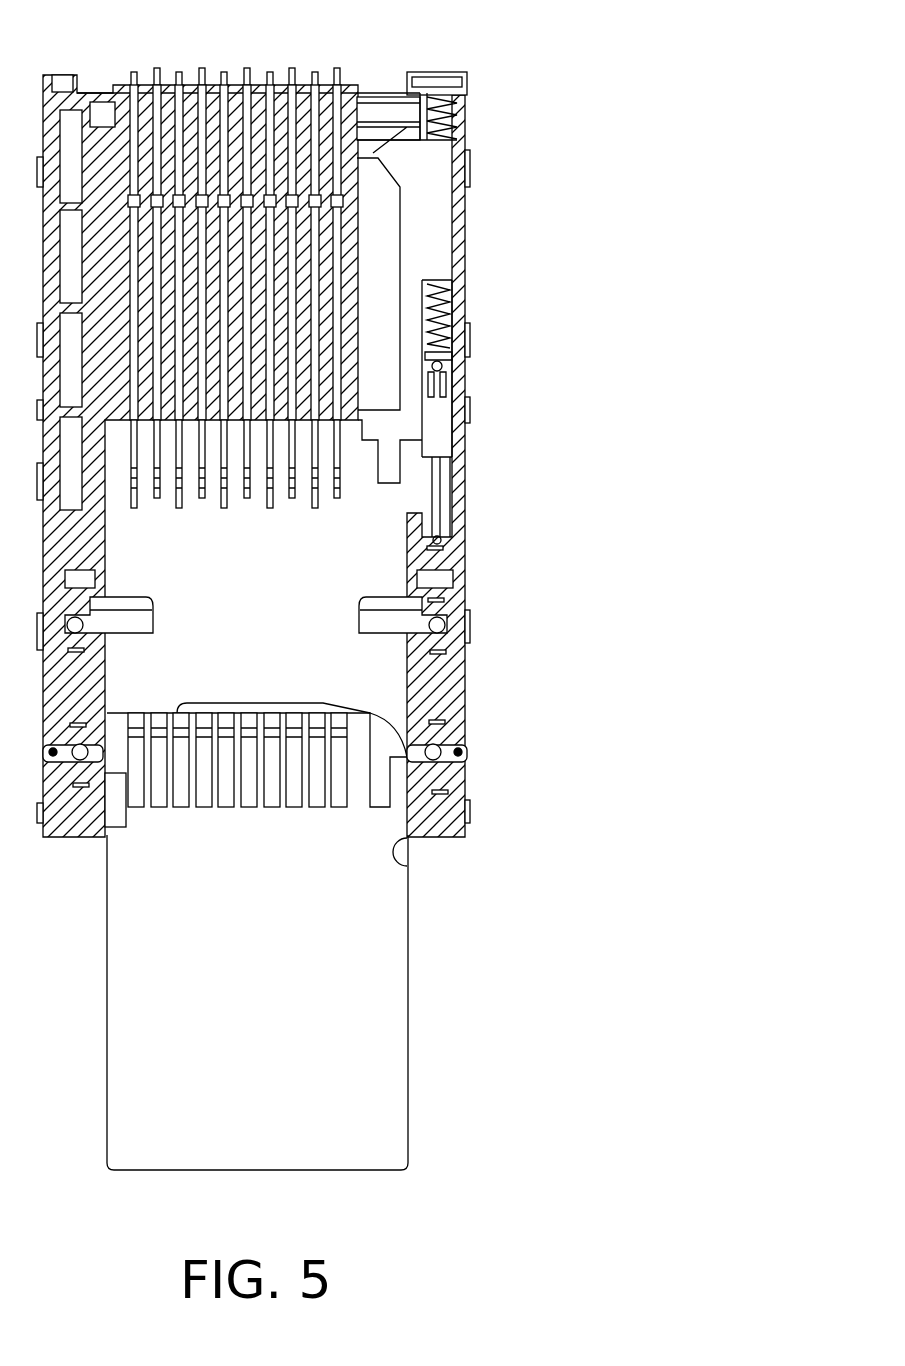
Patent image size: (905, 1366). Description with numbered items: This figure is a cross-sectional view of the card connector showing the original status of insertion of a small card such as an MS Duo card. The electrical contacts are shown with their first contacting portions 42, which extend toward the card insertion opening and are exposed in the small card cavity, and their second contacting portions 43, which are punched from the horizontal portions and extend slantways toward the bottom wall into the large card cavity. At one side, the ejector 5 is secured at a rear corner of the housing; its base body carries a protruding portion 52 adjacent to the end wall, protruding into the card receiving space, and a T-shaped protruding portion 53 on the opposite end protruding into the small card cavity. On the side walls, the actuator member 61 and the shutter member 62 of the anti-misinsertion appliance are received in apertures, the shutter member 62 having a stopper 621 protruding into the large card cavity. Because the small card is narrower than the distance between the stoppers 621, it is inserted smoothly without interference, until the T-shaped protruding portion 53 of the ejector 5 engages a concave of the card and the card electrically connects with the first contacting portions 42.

The ejector 5 is at (437, 200).
The first contacting portion 42 is at (353, 380).
The second contacting portion 43 is at (290, 237).
The protruding portion 52 is at (462, 103).
The T-shaped protruding portion 53 is at (398, 467).
The actuator member 61 is at (468, 752).
The shutter member 62 is at (443, 594).
The stopper 621 is at (377, 617).